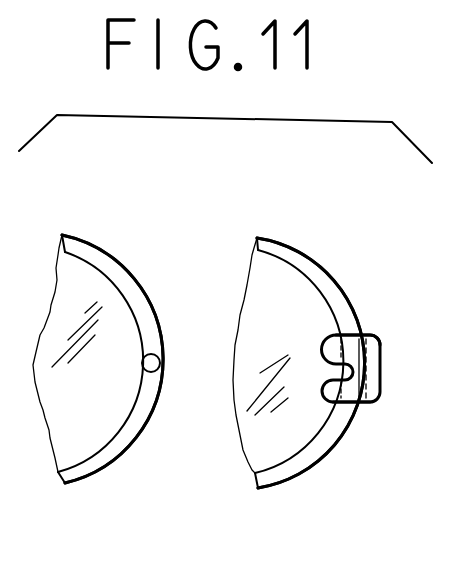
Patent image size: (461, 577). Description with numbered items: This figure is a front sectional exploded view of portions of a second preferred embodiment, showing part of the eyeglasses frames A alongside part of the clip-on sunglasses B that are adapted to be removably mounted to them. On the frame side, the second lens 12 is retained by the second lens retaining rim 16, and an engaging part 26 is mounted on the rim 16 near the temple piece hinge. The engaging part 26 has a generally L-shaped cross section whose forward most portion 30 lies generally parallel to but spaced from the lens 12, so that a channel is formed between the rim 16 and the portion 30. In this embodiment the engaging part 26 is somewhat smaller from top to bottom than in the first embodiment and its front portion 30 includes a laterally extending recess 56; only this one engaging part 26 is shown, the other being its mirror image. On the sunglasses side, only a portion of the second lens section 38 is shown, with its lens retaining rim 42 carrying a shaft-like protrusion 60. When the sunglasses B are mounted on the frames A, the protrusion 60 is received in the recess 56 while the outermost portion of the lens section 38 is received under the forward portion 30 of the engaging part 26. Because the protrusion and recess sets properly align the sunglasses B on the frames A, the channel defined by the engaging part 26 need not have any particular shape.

The second lens 12 is at (293, 319).
The second lens retaining rim 16 is at (288, 247).
The engaging part 26 is at (380, 346).
The forward most portion 30 is at (338, 337).
The second lens section 38 is at (97, 420).
The lens retaining rim 42 is at (137, 303).
The recess 56 is at (355, 404).
The protrusion 60 is at (160, 362).
The eyeglasses frames A is at (313, 478).
The clip-on sunglasses B is at (88, 228).